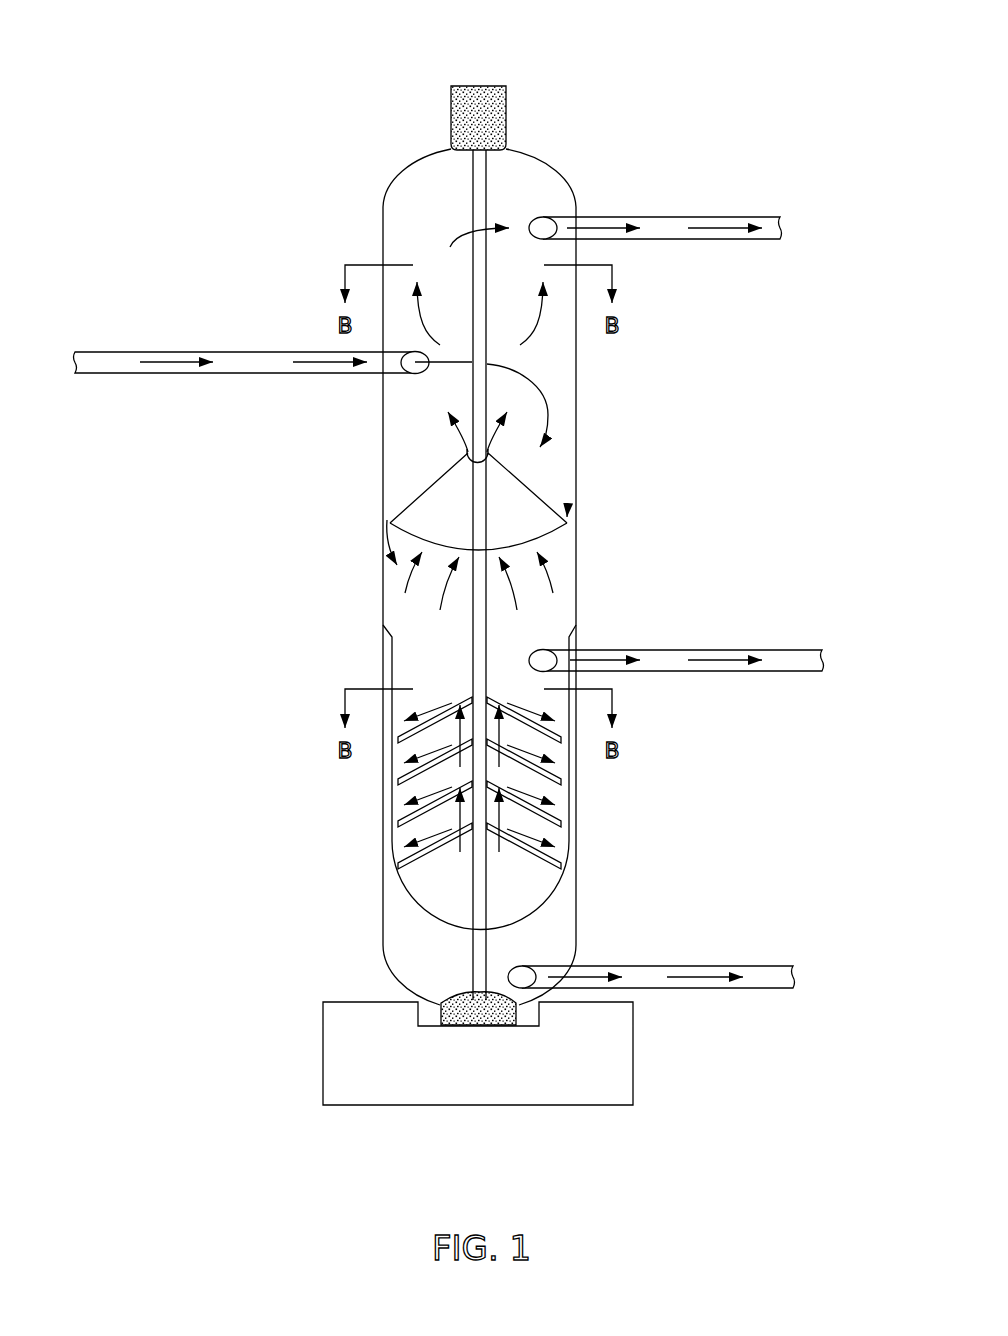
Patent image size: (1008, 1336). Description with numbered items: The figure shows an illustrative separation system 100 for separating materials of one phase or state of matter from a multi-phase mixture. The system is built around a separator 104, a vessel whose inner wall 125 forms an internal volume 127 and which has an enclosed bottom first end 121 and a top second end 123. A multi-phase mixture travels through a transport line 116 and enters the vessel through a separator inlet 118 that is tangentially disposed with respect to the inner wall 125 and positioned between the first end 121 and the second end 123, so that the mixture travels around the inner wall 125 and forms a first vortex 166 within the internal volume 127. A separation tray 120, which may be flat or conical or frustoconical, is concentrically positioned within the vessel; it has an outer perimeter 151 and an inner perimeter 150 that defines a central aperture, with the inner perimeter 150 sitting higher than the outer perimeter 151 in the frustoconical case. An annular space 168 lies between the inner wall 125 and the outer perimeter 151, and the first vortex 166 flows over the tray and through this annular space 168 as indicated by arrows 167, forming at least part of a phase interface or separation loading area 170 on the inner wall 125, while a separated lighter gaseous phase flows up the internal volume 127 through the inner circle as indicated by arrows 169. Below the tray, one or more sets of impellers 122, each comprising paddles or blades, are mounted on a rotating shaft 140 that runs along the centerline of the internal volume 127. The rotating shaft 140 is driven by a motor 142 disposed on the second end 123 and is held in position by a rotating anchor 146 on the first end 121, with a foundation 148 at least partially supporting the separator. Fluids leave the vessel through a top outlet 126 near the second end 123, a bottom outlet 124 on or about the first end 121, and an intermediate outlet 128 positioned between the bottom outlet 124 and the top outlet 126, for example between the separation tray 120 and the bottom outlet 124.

The separation system 100 is at (266, 86).
The separator 104 is at (570, 185).
The transport line 116 is at (124, 352).
The separator inlet 118 is at (408, 374).
The separation tray 120 is at (447, 498).
The first end 121 is at (395, 983).
The impeller 122 is at (560, 732).
The second end 123 is at (409, 164).
The bottom outlet 124 is at (768, 966).
The inner wall 125 is at (383, 612).
The top outlet 126 is at (757, 217).
The internal volume 127 is at (418, 203).
The intermediate outlet 128 is at (790, 672).
The rotating shaft 140 is at (490, 890).
The motor 142 is at (488, 86).
The rotating anchor 146 is at (485, 1012).
The foundation 148 is at (367, 1095).
The inner perimeter 150 is at (490, 455).
The outer perimeter 151 is at (552, 537).
The first vortex 166 is at (548, 403).
The arrows 167 is at (387, 520).
The annular space 168 is at (568, 505).
The arrows 169 is at (492, 447).
The separation loading area 170 is at (540, 908).